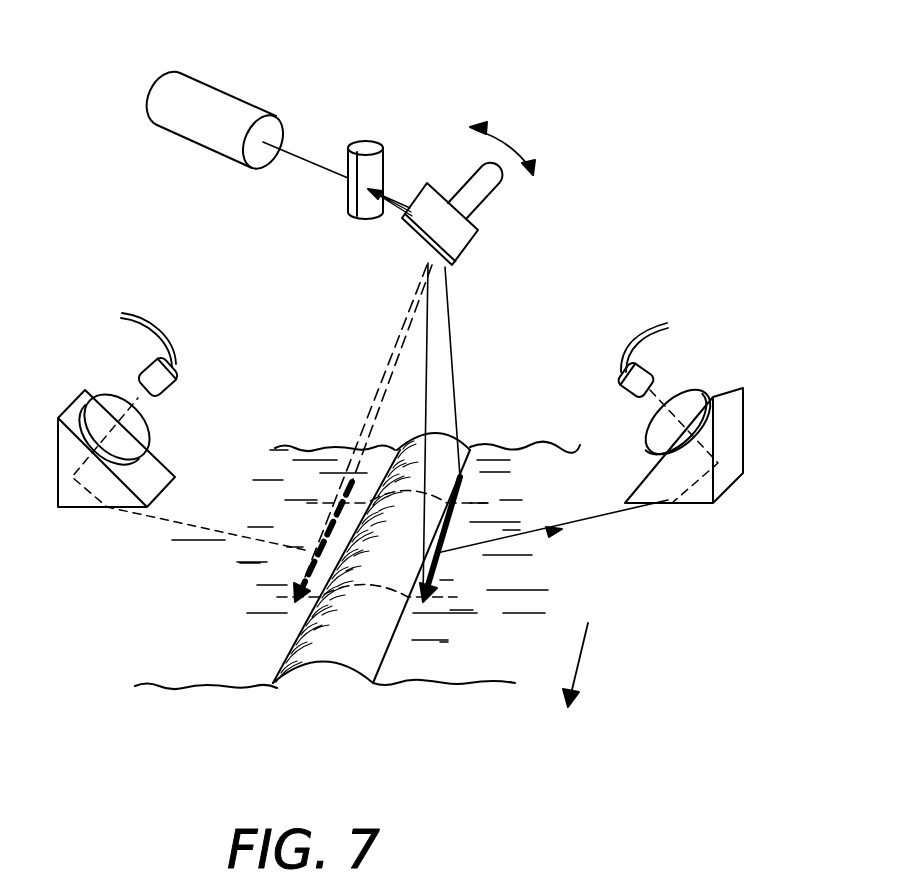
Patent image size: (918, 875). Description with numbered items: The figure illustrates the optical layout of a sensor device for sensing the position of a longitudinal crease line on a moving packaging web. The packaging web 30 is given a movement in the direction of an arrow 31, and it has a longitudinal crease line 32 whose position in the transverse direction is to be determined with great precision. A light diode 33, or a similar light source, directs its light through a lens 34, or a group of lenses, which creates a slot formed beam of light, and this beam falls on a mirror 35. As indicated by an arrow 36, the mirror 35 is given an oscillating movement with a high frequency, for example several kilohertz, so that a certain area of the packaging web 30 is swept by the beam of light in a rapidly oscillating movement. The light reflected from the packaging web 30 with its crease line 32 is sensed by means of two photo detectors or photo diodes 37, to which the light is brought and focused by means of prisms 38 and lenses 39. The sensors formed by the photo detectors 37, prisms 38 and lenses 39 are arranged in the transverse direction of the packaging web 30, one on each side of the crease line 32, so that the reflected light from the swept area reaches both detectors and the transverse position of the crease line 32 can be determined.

The packaging web 30 is at (453, 668).
The arrow 31 is at (583, 663).
The longitudinal crease line 32 is at (358, 662).
The light diode 33 is at (227, 115).
The lens 34 is at (360, 140).
The mirror 35 is at (418, 180).
The arrow 36 is at (520, 142).
The photo detectors 37 is at (147, 370).
The prisms 38 is at (78, 508).
The lenses 39 is at (102, 400).